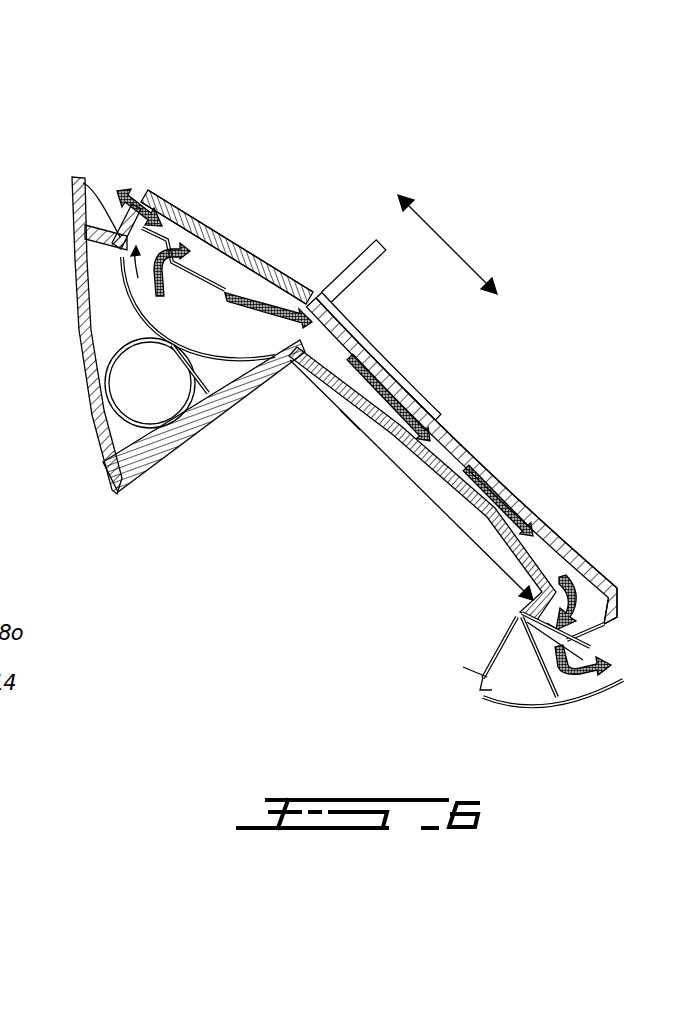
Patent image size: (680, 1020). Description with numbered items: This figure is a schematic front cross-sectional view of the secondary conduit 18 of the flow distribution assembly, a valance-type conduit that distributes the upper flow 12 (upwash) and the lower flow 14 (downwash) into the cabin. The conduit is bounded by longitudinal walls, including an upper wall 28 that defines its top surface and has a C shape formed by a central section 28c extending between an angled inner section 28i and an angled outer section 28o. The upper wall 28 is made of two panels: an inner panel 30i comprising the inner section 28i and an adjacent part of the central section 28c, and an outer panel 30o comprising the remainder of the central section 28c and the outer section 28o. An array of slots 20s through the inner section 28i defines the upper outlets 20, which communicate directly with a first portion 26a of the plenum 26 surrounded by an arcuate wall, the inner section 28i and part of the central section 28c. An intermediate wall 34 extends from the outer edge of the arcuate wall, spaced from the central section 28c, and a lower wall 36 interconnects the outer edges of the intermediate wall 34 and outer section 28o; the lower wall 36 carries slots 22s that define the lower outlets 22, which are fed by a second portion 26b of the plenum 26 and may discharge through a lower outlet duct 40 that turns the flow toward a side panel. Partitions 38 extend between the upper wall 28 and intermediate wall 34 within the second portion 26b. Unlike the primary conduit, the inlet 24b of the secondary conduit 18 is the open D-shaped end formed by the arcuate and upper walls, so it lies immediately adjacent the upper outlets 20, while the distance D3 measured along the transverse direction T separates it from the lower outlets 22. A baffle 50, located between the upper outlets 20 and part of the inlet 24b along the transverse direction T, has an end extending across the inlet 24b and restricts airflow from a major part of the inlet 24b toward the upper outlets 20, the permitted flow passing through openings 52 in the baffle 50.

The upper flow 12 is at (127, 192).
The lower flow 14 is at (607, 663).
The secondary conduit 18 is at (225, 204).
The upper outlets 20 is at (152, 157).
The slots 20s is at (137, 198).
The lower outlets 22 is at (458, 653).
The slots 22s is at (533, 647).
The inlet 24b is at (215, 317).
The plenum 26 is at (329, 480).
The first portion of the plenum 26a is at (291, 357).
The second portion of the plenum 26b is at (442, 450).
The upper wall 28 is at (268, 263).
The inner section 28i is at (83, 183).
The outer section 28o is at (604, 633).
The central section 28c is at (387, 360).
The inner panel 30i is at (223, 230).
The outer panel 30o is at (488, 463).
The intermediate wall 34 is at (353, 415).
The lower wall 36 is at (537, 655).
The partitions 38 is at (315, 292).
The lower outlet duct 40 is at (563, 687).
The baffle 50 is at (126, 285).
The openings 52 is at (180, 238).
The distance D3 is at (462, 530).
The transverse direction T is at (450, 243).